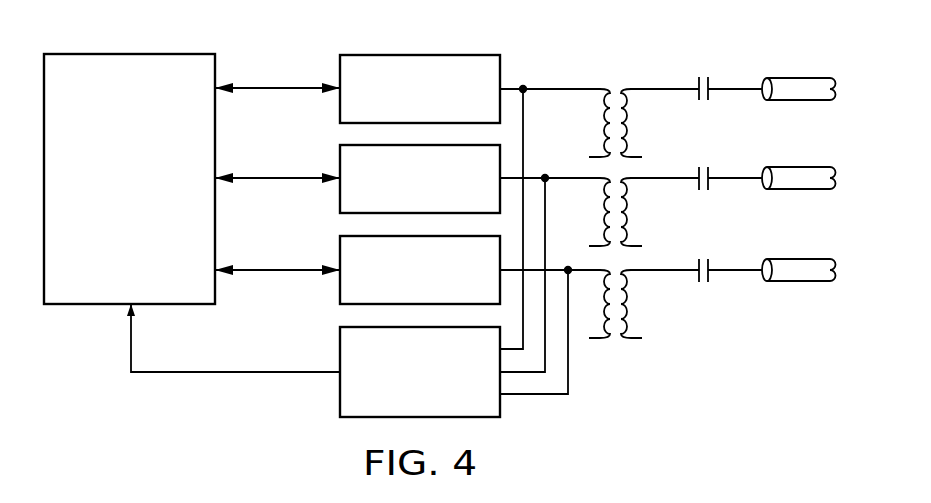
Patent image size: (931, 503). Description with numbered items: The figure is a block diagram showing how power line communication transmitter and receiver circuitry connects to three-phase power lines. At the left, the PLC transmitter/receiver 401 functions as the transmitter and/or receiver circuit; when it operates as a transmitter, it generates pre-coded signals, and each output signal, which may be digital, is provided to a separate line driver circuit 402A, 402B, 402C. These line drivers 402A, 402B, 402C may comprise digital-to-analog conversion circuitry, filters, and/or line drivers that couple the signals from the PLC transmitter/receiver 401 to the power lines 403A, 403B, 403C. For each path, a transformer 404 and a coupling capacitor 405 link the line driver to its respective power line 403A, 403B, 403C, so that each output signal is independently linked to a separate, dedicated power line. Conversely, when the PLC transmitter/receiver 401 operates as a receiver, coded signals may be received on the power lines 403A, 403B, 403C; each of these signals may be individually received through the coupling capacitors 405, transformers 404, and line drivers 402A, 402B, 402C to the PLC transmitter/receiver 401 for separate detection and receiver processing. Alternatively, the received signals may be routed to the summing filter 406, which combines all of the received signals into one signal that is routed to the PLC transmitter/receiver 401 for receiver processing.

The PLC transmitter/receiver 401 is at (150, 243).
The line driver circuit 402A is at (340, 76).
The line driver circuit 402B is at (340, 166).
The line driver circuit 402C is at (340, 292).
The power line 403A is at (798, 77).
The power line 403B is at (798, 166).
The power line 403C is at (798, 283).
The transformer 404 is at (614, 84).
The coupling capacitor 405 is at (703, 74).
The summing filter 406 is at (340, 383).